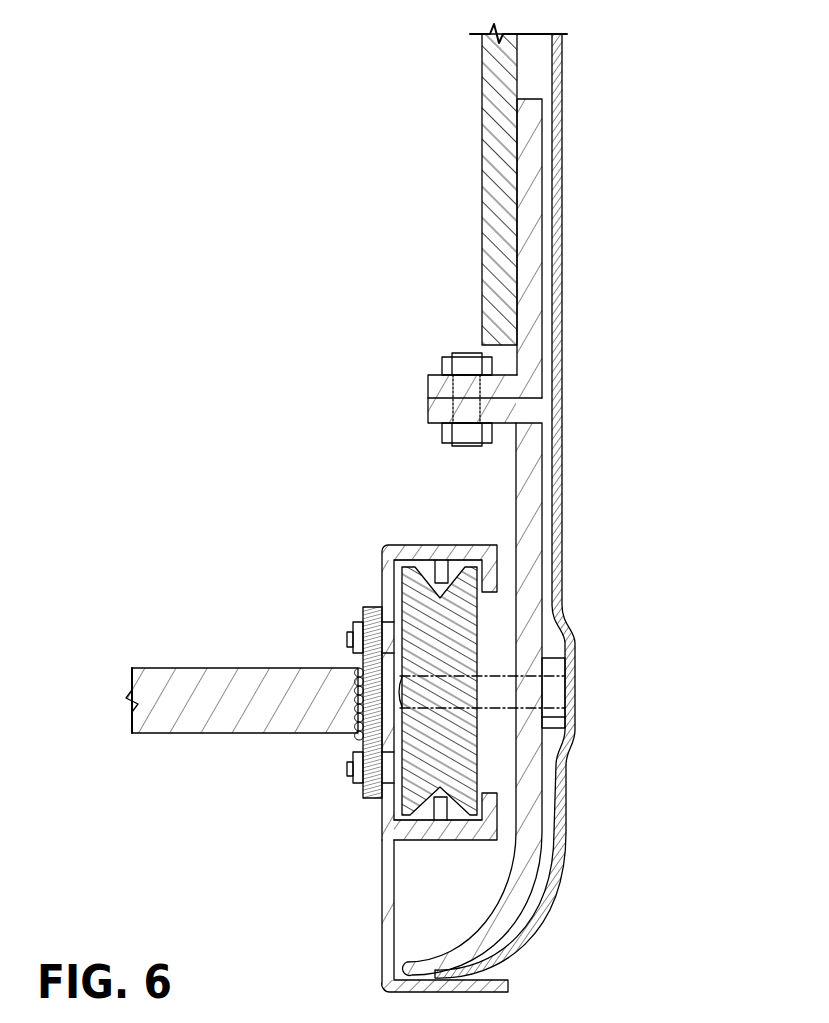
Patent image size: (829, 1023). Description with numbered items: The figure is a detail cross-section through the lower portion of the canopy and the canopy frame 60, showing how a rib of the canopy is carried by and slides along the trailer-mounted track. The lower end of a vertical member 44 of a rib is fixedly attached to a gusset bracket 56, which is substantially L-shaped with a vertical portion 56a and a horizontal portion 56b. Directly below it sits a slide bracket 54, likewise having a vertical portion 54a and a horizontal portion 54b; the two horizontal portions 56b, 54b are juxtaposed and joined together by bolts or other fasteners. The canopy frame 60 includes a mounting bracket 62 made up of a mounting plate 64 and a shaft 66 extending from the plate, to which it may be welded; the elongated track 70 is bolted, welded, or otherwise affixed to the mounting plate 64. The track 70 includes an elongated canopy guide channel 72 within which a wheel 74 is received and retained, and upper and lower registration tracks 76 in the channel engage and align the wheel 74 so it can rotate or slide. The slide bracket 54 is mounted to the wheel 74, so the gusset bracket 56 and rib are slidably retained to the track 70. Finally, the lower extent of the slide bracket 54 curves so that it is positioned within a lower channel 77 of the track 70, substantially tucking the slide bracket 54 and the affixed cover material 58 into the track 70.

The vertical member 44 is at (482, 205).
The slide bracket 54 is at (470, 695).
The vertical portion 54a is at (542, 478).
The horizontal portion 54b is at (428, 408).
The gusset bracket 56 is at (484, 261).
The vertical portion 56a is at (544, 195).
The horizontal portion 56b is at (428, 380).
The cover material 58 is at (558, 392).
The canopy frame 60 is at (260, 677).
The mounting bracket 62 is at (352, 735).
The mounting plate 64 is at (356, 620).
The shaft 66 is at (200, 685).
The track 70 is at (403, 690).
The canopy guide channel 72 is at (432, 571).
The wheel 74 is at (457, 758).
The registration track 76 is at (442, 568).
The lower channel 77 is at (427, 876).